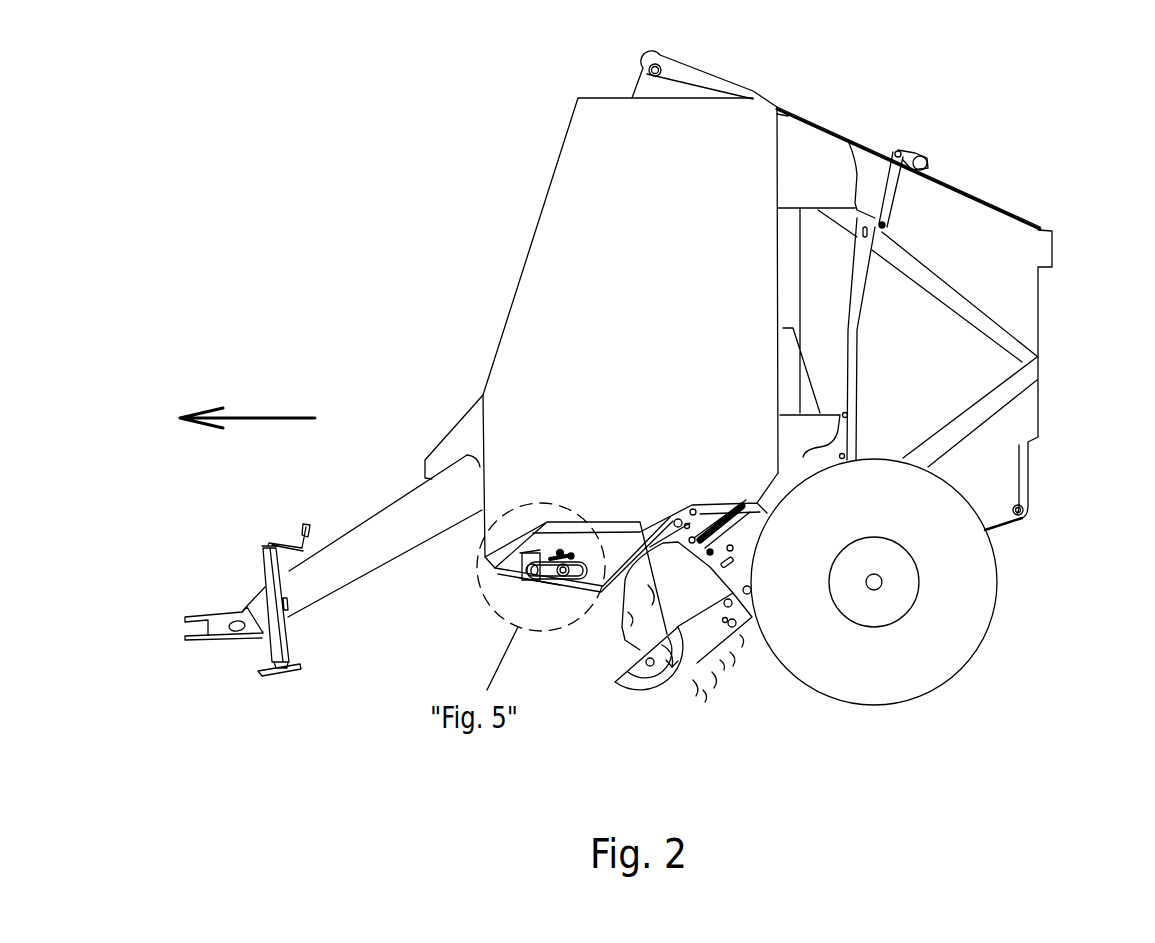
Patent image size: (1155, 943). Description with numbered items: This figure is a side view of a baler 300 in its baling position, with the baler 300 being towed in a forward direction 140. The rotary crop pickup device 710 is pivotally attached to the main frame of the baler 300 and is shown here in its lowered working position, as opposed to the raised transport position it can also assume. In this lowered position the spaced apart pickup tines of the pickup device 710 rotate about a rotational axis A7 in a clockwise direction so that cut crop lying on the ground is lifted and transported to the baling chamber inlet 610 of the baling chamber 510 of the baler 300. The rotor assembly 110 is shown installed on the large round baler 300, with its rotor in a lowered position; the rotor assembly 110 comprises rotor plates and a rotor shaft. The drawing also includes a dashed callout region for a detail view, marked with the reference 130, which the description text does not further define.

The baler 300 is at (498, 215).
The forward direction 140 is at (277, 417).
The baling chamber 510 is at (913, 387).
The rotor assembly 110 is at (465, 577).
The hitch coupling assembly 130 is at (568, 595).
The rotary crop pickup device 710 is at (735, 678).
The baling chamber inlet 610 is at (748, 520).
The rotational axis A7 is at (653, 663).